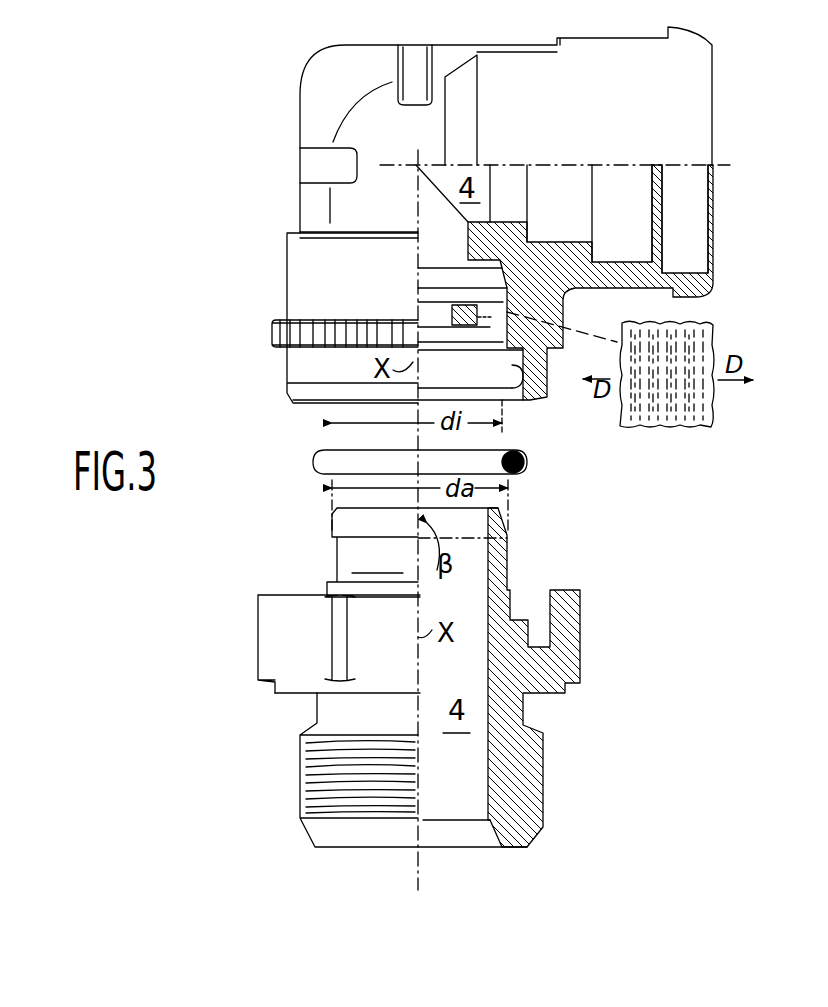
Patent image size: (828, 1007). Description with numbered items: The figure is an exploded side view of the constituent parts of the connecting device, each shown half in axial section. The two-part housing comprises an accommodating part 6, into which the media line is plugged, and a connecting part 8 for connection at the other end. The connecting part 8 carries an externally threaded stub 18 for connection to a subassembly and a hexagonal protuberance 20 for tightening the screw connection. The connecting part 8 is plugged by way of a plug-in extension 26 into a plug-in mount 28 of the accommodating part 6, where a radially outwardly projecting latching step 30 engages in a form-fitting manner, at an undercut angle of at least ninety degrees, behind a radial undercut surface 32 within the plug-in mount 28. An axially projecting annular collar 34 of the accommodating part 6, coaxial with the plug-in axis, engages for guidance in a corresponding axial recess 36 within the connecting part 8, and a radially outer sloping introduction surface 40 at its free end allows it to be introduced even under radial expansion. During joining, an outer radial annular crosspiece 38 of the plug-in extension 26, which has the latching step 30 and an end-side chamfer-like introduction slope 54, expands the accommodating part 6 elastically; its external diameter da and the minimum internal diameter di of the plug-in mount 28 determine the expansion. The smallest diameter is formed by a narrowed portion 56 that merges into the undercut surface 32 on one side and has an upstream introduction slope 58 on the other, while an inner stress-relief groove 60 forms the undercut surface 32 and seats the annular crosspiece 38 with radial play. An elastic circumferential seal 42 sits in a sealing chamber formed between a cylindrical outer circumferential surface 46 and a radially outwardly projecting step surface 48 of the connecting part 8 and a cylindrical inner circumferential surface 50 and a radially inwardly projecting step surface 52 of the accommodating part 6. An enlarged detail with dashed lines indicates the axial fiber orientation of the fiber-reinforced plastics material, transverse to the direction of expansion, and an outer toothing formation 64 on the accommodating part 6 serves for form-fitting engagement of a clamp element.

The accommodating part 6 is at (345, 132).
The connecting part 8 is at (515, 675).
The externally threaded stub 18 is at (313, 772).
The hexagonal protuberance 20 is at (282, 642).
The plug-in extension 26 is at (493, 560).
The plug-in mount 28 is at (487, 332).
The latching step 30 is at (357, 548).
The undercut surface 32 is at (440, 300).
The annular collar 34 is at (305, 362).
The axial recess 36 is at (540, 625).
The annular crosspiece 38 is at (505, 535).
The sloping introduction surface 40 is at (318, 392).
The circumferential seal 42 is at (323, 458).
The outer circumferential surface 46 is at (508, 610).
The step surface 48 is at (517, 628).
The inner circumferential surface 50 is at (520, 372).
The step surface 52 is at (460, 352).
The introduction slope 54 is at (333, 520).
The narrowed portion 56 is at (507, 313).
The introduction slope 58 is at (507, 330).
The stress-relief groove 60 is at (495, 293).
The outer toothing formation 64 is at (270, 335).